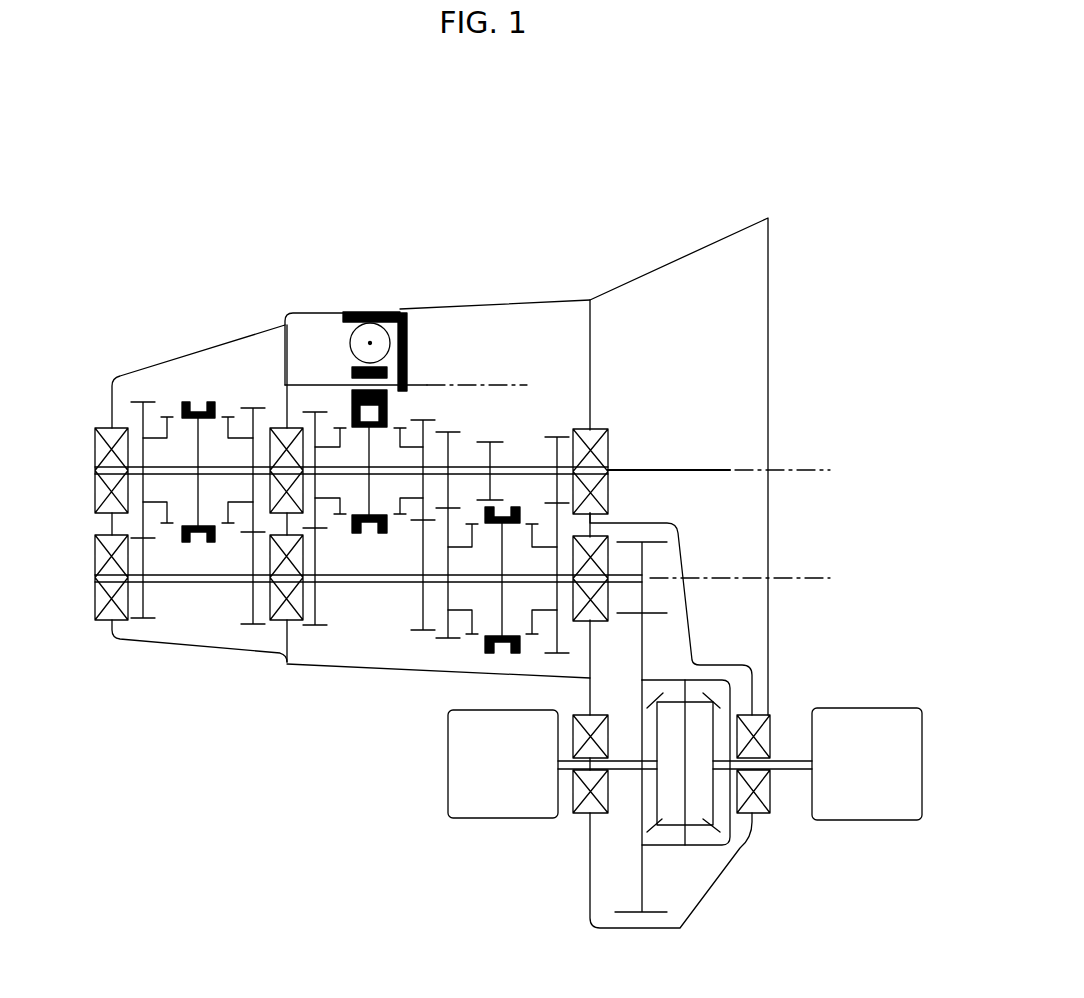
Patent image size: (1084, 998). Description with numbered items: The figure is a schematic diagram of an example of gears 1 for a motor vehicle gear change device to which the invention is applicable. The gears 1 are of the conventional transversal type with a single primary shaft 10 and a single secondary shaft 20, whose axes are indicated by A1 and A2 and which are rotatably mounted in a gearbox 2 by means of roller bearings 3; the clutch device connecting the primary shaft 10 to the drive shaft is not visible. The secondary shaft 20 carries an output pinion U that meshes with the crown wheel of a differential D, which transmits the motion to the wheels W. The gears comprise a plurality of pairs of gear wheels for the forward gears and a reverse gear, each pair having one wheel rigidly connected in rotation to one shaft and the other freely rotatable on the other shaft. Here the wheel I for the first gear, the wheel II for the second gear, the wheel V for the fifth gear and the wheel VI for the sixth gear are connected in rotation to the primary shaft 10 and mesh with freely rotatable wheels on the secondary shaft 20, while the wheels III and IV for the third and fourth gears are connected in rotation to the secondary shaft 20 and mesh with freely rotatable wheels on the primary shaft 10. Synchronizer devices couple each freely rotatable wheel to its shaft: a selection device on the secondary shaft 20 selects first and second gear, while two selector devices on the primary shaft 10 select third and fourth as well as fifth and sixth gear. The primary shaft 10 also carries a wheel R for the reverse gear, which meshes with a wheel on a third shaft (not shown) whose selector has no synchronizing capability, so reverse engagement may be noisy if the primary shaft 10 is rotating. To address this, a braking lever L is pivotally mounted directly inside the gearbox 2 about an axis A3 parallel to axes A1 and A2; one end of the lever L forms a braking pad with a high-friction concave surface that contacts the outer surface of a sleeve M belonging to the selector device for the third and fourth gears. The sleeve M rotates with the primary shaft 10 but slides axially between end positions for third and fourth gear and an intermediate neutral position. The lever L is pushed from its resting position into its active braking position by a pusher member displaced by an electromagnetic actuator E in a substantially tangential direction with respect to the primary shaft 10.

The gears 1 is at (491, 537).
The gearbox 2 is at (510, 300).
The roller bearings 3 is at (105, 455).
The primary shaft 10 is at (688, 468).
The secondary shaft 20 is at (202, 597).
The electromagnetic actuator E is at (348, 345).
The braking lever L is at (338, 372).
The sleeve M is at (347, 413).
The wheel for the first gear I is at (550, 433).
The wheel for the second gear II is at (457, 447).
The wheel for the third gear III is at (413, 618).
The wheel for the fourth gear IV is at (327, 597).
The wheel for the fifth gear V is at (240, 608).
The wheel for the sixth gear VI is at (145, 628).
The wheel for engagement of the reverse gear R is at (490, 437).
The output pinion U is at (653, 602).
The differential D is at (694, 860).
The wheels W is at (487, 810).
The axis of the primary shaft A1 is at (793, 470).
The axis of the secondary shaft A2 is at (798, 577).
The axis A3 is at (440, 383).